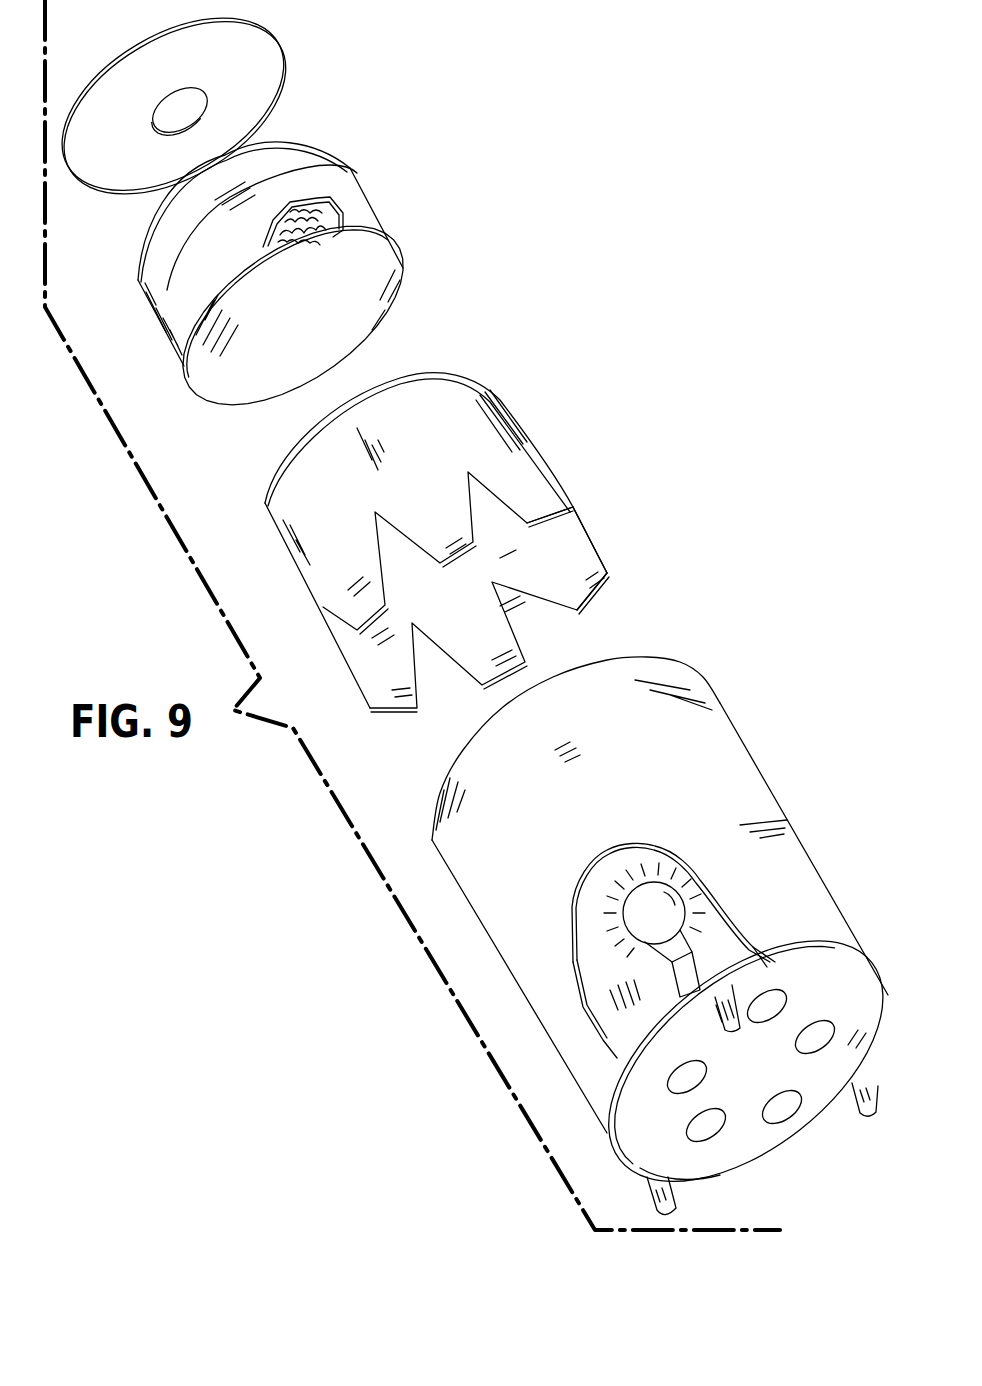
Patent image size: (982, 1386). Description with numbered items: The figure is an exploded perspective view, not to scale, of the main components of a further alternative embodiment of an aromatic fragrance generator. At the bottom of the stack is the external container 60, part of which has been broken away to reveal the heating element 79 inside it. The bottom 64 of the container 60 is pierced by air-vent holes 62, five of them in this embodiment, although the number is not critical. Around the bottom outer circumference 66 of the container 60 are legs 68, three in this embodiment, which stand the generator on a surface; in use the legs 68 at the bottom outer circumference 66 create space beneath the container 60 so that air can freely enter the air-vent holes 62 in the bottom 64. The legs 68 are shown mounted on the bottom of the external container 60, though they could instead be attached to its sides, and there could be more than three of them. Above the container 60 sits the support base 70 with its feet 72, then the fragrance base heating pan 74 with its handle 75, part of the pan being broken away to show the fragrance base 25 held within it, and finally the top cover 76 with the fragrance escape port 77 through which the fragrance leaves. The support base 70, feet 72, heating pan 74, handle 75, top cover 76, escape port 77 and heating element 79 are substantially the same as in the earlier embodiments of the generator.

The light-diffusing element 25 is at (362, 255).
The external container 60 is at (703, 743).
The air-vent holes 62 is at (826, 1024).
The bottom 64 is at (740, 1147).
The bottom outer circumference 66 is at (716, 1178).
The legs 68 is at (648, 1200).
The support base 70 is at (483, 385).
The feet 72 is at (513, 643).
The fragrance base heating pan 74 is at (360, 181).
The handle 75 is at (333, 156).
The top cover 76 is at (267, 76).
The fragrance escape port 77 is at (196, 105).
The heating element 79 is at (680, 907).